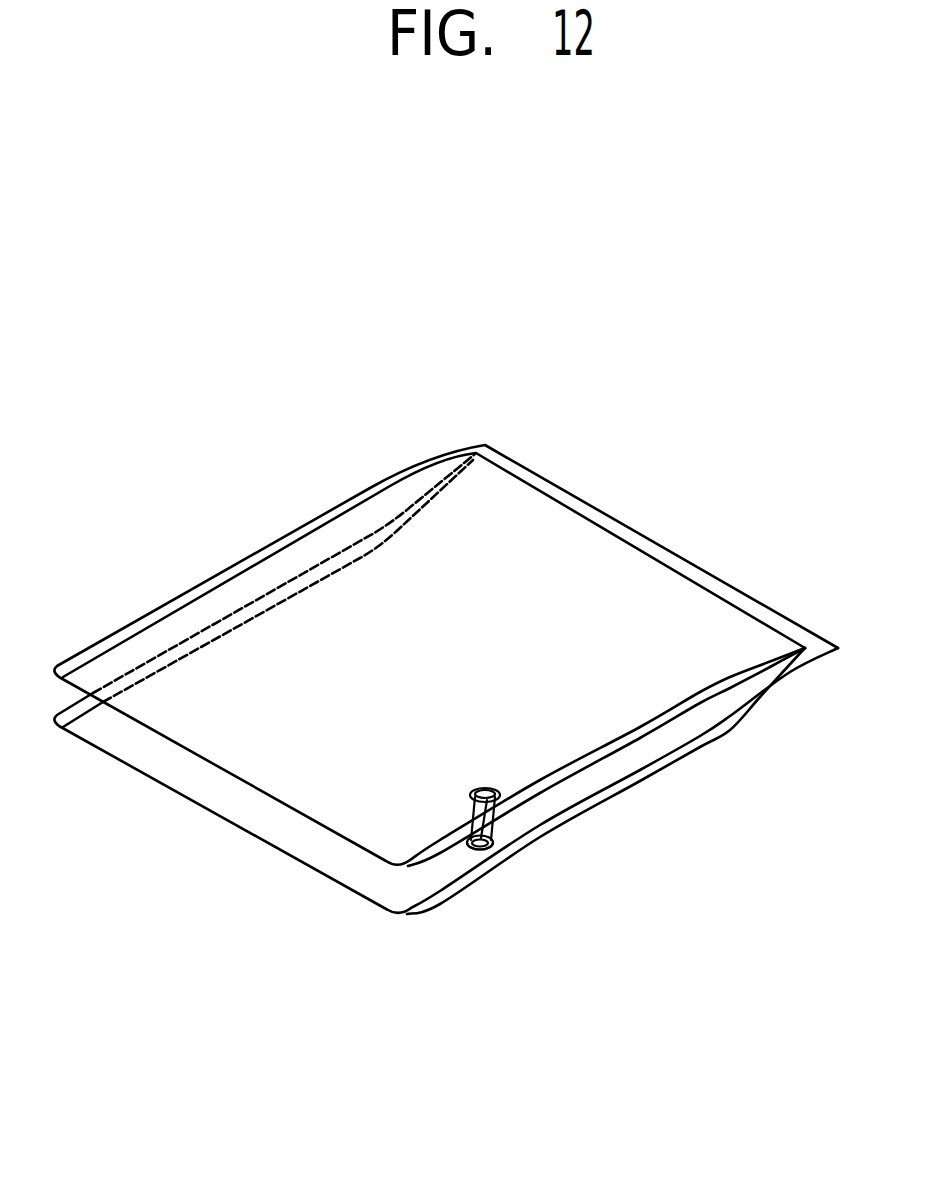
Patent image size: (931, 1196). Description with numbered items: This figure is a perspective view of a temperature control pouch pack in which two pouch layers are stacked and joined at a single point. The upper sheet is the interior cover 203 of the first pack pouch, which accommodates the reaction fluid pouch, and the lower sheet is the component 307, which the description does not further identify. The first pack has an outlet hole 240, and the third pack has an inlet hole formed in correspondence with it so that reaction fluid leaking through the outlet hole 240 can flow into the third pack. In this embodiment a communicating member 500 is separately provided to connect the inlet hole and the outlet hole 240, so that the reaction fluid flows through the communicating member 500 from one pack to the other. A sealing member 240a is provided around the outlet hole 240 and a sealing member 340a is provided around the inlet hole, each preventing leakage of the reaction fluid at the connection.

The interior cover 203 is at (217, 608).
The lower panel 307 is at (732, 707).
The communicating member 500 is at (500, 836).
The sealing member 240a is at (503, 794).
The sealing member 340a is at (499, 845).
The outlet hole 240 is at (483, 851).